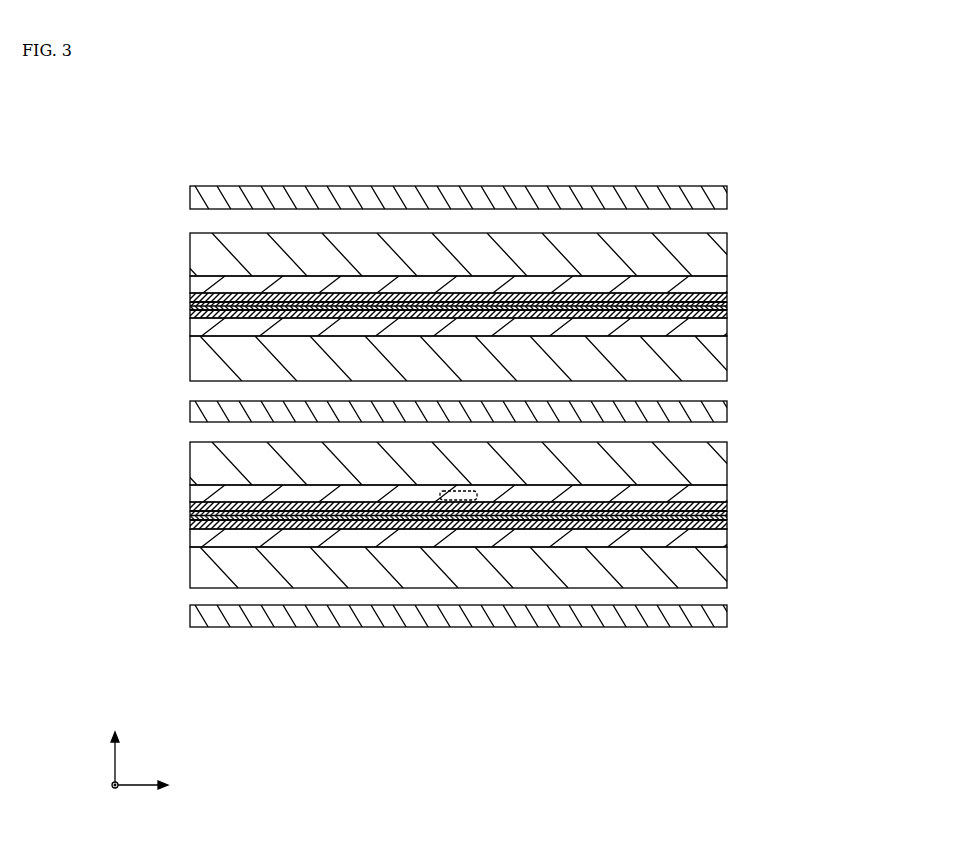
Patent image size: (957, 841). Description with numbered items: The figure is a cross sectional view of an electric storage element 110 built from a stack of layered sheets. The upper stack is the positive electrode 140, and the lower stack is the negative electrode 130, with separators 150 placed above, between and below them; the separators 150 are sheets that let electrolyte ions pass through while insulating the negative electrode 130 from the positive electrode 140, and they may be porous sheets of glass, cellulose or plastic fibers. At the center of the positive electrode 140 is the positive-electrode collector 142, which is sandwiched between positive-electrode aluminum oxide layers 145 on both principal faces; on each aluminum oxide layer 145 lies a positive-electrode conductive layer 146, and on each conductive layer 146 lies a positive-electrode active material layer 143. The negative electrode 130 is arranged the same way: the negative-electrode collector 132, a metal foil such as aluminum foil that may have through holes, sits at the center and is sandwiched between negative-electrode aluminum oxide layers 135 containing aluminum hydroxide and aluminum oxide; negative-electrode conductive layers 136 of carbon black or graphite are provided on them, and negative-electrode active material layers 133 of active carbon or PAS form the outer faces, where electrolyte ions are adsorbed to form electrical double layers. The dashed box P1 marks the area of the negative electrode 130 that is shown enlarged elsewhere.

The display device 110 is at (753, 137).
The separator 150 is at (190, 197).
The positive electrode 140 is at (820, 197).
The positive-electrode active material layer 143 is at (728, 258).
The positive-electrode conductive layer 146 is at (728, 286).
The positive-electrode aluminum oxide layer 145 is at (728, 298).
The positive-electrode collector 142 is at (728, 306).
The negative electrode 130 is at (820, 415).
The negative-electrode active material layer 133 is at (728, 466).
The negative-electrode conductive layer 136 is at (728, 494).
The negative-electrode aluminum oxide layer 135 is at (728, 506).
The negative-electrode collector 132 is at (728, 515).
The boxed area P1 is at (437, 497).